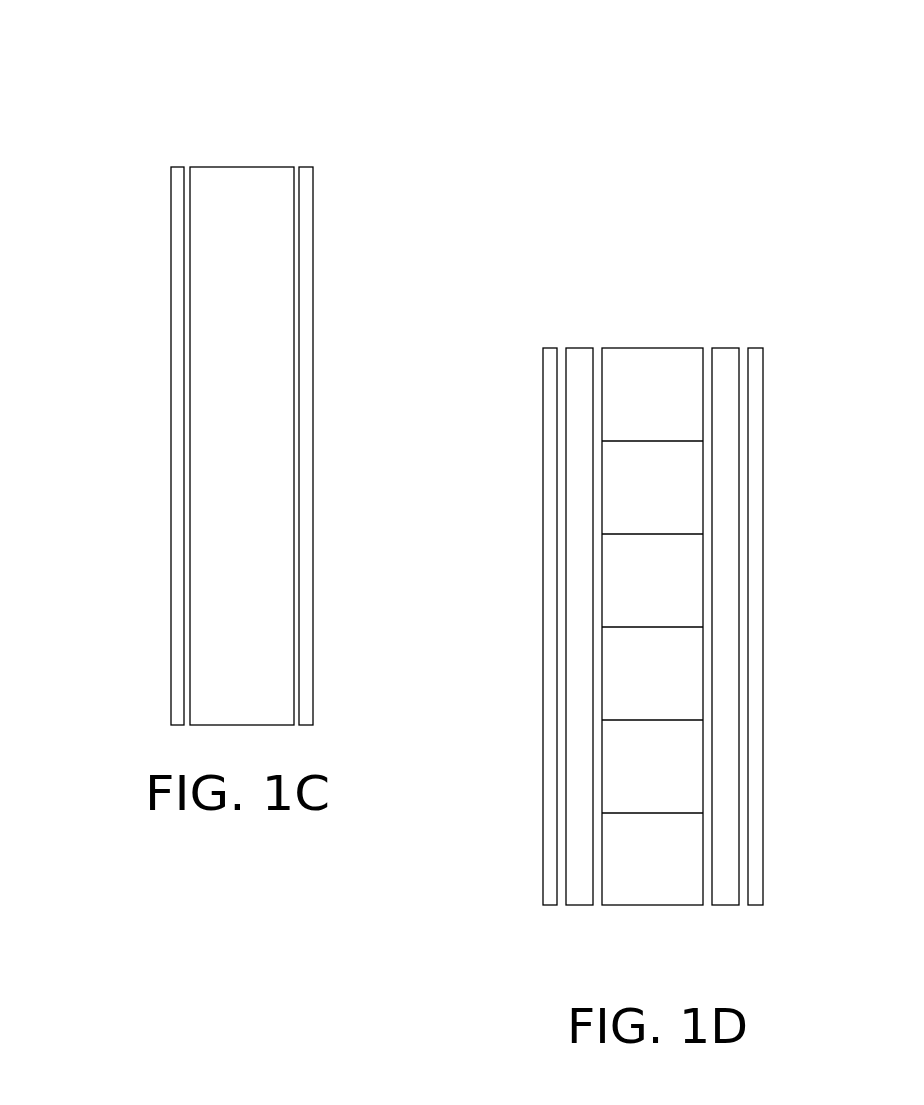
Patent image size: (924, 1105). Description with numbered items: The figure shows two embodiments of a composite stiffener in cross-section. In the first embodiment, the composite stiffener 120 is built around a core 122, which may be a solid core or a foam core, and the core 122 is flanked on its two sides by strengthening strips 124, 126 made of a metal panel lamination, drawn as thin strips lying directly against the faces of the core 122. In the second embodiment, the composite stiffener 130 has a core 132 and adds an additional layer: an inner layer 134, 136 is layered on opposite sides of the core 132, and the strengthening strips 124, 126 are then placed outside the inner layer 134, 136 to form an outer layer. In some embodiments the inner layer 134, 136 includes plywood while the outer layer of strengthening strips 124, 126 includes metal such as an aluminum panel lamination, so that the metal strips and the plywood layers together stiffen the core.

In FIG. 1C, the composite stiffener 120 is at (257, 87).
In FIG. 1C, the core 122 is at (213, 167).
In FIG. 1C, the strengthening strip 124 is at (172, 207).
In FIG. 1D, the strengthening strip 124 is at (548, 907).
In FIG. 1C, the strengthening strip 126 is at (315, 210).
In FIG. 1D, the strengthening strip 126 is at (758, 907).
In FIG. 1D, the composite stiffener 130 is at (697, 235).
In FIG. 1D, the core 132 is at (620, 347).
In FIG. 1D, the inner layer 134 is at (587, 347).
In FIG. 1D, the inner layer 136 is at (722, 347).